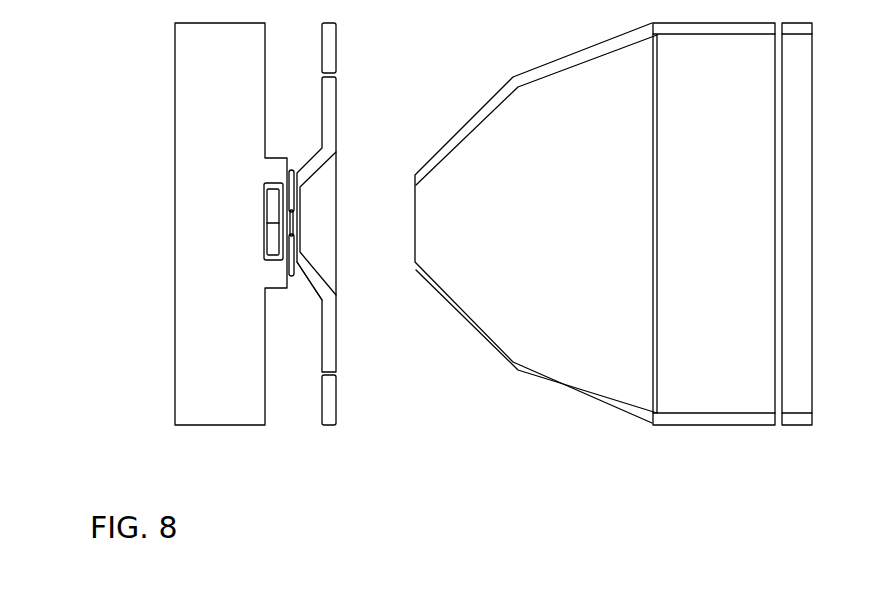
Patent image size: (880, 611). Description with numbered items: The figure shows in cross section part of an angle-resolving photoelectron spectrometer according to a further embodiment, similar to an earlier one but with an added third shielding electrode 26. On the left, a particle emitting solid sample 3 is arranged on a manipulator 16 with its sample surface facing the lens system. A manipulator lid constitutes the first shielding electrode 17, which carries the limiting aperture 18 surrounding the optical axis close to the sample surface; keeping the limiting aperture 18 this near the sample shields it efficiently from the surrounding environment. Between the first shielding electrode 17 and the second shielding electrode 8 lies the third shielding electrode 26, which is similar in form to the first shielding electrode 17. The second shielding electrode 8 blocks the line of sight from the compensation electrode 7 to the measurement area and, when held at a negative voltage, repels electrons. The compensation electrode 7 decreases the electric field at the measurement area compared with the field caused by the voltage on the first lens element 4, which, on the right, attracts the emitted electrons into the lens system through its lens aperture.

The manipulator 16 is at (207, 72).
The particle emitting solid sample 3 is at (270, 204).
The shielding electrode 17 is at (288, 258).
The limiting aperture 18 is at (296, 220).
The compensation electrode 7 is at (332, 47).
The second shielding electrode 8 is at (327, 120).
The third shielding electrode 26 is at (296, 253).
The first lens element 4 is at (553, 67).